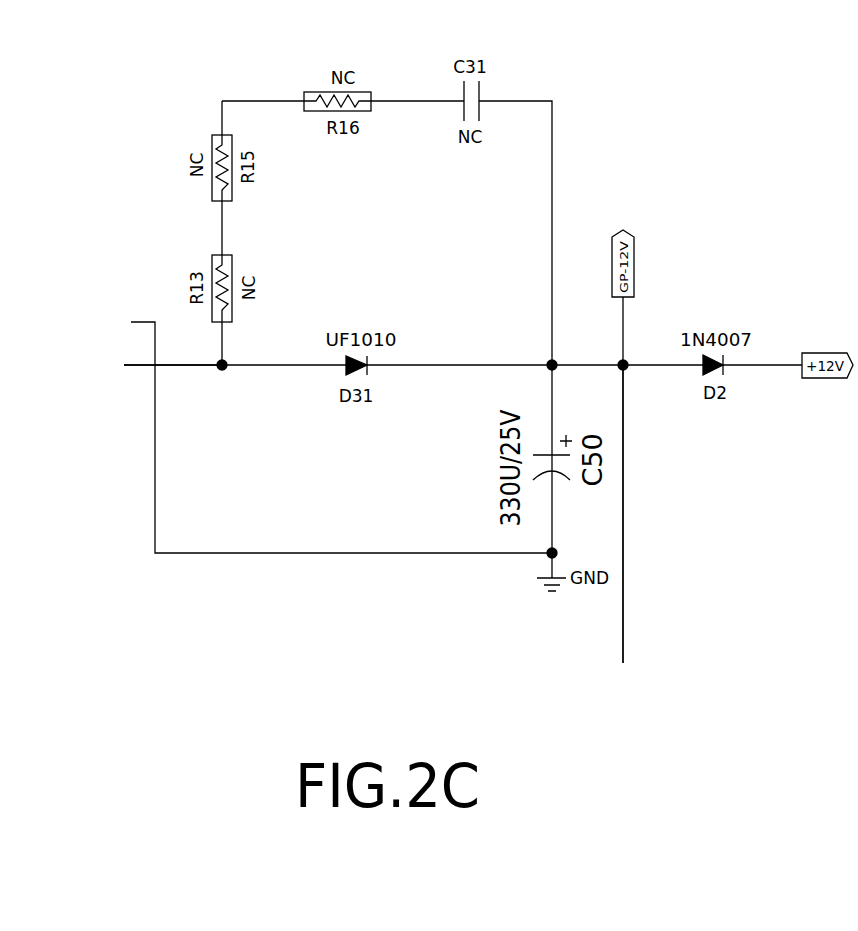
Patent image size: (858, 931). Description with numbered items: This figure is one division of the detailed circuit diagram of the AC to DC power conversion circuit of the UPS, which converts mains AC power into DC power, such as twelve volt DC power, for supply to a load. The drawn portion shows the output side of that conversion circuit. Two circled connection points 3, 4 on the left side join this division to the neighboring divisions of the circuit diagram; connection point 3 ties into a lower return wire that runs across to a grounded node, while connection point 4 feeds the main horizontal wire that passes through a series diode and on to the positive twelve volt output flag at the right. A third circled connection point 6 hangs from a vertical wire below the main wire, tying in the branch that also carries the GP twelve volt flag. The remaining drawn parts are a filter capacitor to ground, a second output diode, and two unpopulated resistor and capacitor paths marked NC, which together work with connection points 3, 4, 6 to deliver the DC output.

The connection terminal 3 is at (316, 425).
The connection terminal 4 is at (151, 382).
The connection terminal 6 is at (623, 539).